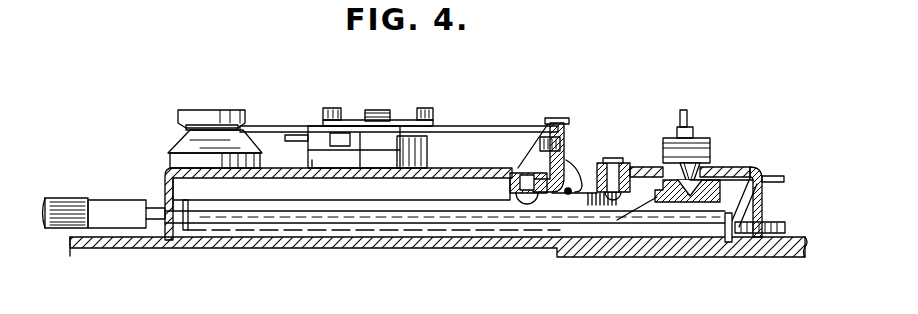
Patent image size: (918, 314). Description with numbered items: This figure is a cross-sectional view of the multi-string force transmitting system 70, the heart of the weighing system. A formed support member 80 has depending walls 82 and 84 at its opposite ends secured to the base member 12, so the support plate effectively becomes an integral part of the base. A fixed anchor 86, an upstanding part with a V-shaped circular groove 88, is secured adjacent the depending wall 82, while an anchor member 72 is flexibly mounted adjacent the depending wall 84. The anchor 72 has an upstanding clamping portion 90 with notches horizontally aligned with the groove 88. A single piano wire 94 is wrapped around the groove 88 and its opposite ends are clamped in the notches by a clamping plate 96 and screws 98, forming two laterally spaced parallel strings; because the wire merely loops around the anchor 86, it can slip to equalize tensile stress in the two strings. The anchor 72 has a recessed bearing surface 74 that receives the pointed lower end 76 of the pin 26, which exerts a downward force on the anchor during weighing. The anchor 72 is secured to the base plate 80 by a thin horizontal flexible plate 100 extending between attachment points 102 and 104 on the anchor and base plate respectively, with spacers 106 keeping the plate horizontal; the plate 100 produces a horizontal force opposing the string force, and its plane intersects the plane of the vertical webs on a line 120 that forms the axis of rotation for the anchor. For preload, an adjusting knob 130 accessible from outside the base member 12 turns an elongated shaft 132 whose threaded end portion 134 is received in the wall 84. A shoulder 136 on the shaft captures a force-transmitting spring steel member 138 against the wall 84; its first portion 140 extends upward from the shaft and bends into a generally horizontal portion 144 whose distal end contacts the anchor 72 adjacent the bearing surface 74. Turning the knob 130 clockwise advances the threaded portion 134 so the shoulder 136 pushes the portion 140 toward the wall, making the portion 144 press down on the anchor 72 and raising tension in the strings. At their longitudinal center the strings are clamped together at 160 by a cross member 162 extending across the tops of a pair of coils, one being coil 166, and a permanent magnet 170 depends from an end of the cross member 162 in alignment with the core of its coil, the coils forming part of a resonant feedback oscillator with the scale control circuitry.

The base member 12 is at (260, 253).
The pin 26 is at (685, 108).
The multi-string force transmitting system 70 is at (452, 85).
The anchor member 72 is at (595, 162).
The recessed bearing surface 74 is at (682, 203).
The pointed lower end 76 is at (710, 167).
The support member 80 is at (473, 178).
The depending wall 82 is at (166, 190).
The depending wall 84 is at (766, 196).
The fixed anchor 86 is at (178, 153).
The V-shaped circular groove 88 is at (182, 128).
The upstanding clamping portion 90 is at (547, 168).
The piano wire 94 is at (443, 126).
The clamping plate 96 is at (576, 142).
The screws 98 is at (580, 150).
The flexible plate 100 is at (568, 194).
The attachment point 102 is at (521, 194).
The attachment point 104 is at (590, 196).
The spacers 106 is at (600, 158).
The line 120 is at (573, 193).
The adjusting knob 130 is at (84, 198).
The elongated shaft 132 is at (240, 211).
The threaded end portion 134 is at (798, 241).
The shoulder 136 is at (741, 234).
The force-transmitting spring steel member 138 is at (744, 200).
The first portion 140 is at (777, 176).
The horizontal portion 144 is at (744, 172).
The clamping point 160 is at (377, 110).
The cross member 162 is at (353, 118).
The coil 166 is at (333, 152).
The permanent magnet 170 is at (415, 128).